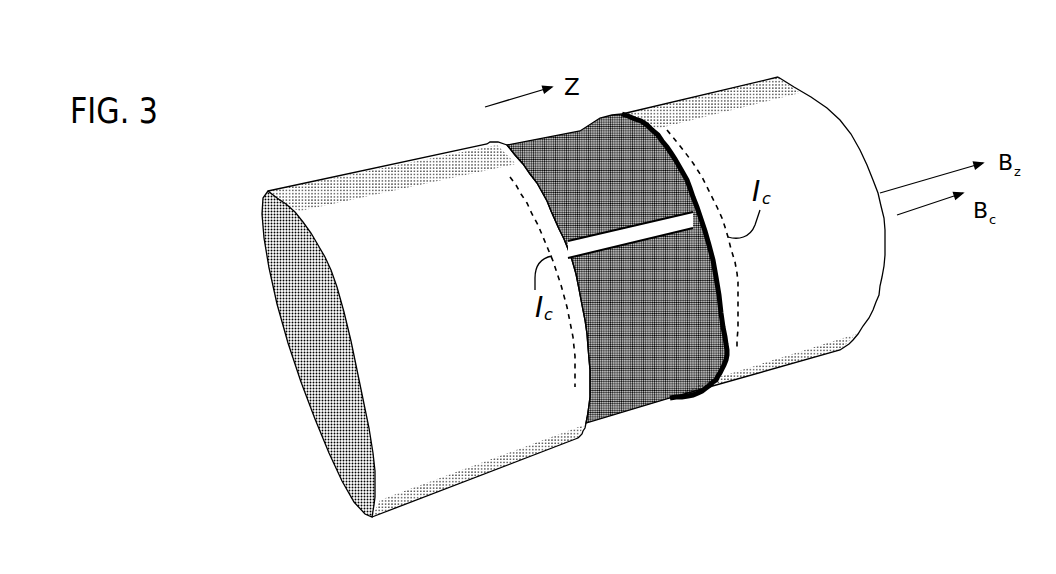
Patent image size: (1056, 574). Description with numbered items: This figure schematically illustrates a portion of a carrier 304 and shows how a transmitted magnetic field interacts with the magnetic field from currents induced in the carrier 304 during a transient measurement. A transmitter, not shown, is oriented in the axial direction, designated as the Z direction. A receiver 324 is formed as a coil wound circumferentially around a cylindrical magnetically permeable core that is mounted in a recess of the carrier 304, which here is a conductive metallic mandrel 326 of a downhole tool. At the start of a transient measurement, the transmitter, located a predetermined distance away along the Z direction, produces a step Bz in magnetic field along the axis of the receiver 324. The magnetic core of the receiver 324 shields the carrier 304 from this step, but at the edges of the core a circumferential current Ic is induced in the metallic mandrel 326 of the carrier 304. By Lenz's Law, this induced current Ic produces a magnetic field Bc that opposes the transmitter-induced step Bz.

The carrier 304 is at (616, 286).
The receiver 324 is at (617, 387).
The conductive metallic mandrel 326 is at (482, 447).